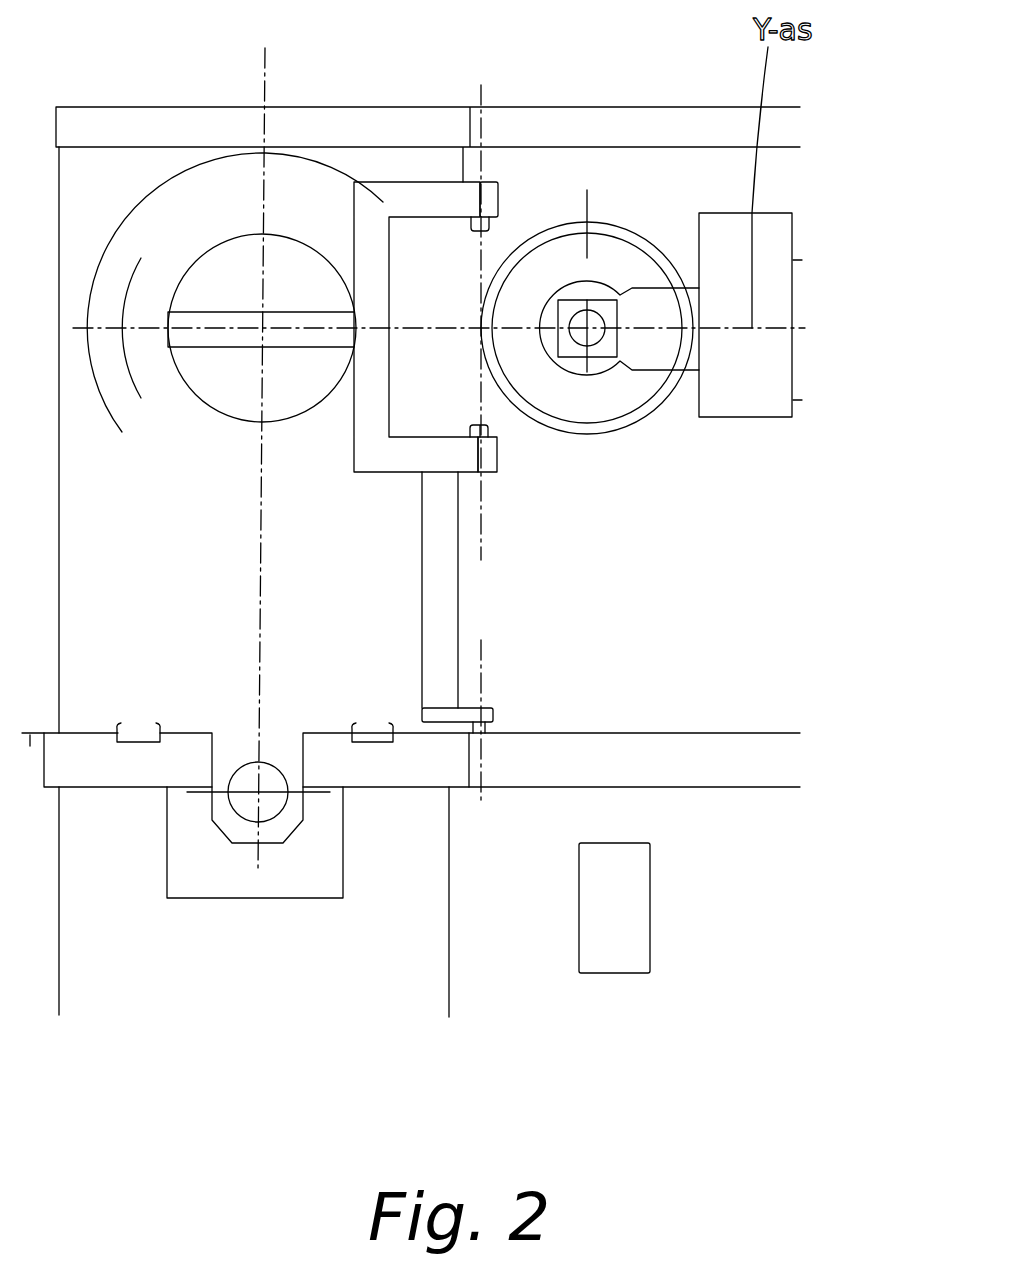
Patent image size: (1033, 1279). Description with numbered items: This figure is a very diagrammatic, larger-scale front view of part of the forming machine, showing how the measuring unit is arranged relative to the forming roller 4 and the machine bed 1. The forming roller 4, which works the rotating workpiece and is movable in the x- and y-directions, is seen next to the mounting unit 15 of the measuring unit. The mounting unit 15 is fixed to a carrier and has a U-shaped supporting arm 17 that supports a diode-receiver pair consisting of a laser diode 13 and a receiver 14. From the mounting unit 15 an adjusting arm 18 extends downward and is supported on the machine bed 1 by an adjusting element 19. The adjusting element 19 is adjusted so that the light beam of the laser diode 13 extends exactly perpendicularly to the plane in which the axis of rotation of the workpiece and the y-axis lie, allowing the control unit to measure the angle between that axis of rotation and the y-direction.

The machine bed 1 is at (668, 768).
The forming roller 4 is at (587, 255).
The laser diode 13 is at (484, 222).
The receiver 14 is at (474, 428).
The mounting unit 15 is at (219, 308).
The U-shaped supporting arm 17 is at (375, 190).
The adjusting arm 18 is at (445, 690).
The adjusting element 19 is at (481, 735).